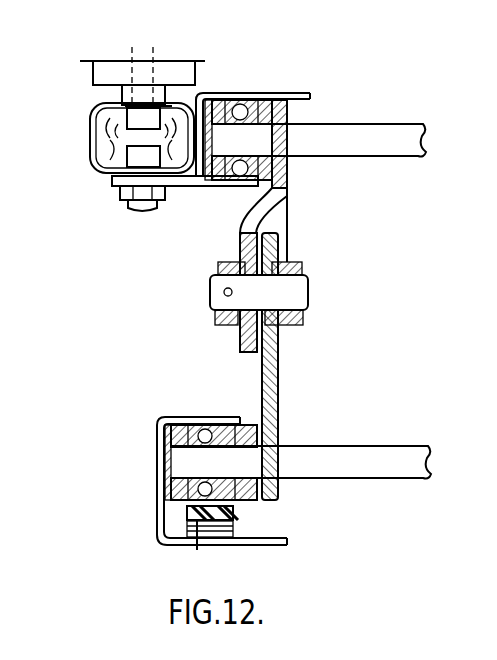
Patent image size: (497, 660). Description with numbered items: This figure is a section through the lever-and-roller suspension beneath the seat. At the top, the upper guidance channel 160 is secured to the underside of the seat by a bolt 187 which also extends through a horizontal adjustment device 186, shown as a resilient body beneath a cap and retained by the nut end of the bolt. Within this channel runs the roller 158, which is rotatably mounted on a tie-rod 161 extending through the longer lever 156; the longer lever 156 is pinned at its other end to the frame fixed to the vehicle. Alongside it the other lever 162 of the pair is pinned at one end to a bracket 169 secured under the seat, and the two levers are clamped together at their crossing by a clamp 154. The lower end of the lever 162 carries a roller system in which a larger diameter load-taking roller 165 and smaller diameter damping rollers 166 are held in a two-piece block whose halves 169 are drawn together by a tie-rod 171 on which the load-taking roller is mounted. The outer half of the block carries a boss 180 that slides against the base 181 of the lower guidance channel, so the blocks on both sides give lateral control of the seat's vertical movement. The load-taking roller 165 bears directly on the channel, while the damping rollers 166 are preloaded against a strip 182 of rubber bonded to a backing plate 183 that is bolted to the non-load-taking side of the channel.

The clamp 154 is at (306, 292).
The longer lever 156 is at (246, 252).
The roller 158 is at (250, 100).
The upper guidance channel 160 is at (232, 93).
The tie-rod 161 is at (348, 148).
The lever 162 is at (278, 385).
The load-taking roller 165 is at (181, 416).
The damping roller 166 is at (237, 512).
The bracket 169 is at (252, 425).
The tie-rod 171 is at (370, 468).
The boss 180 is at (158, 480).
The base of guidance channel 181 is at (165, 470).
The strip of rubber 182 is at (187, 527).
The backing plate 183 is at (197, 542).
The horizontal adjustment device 186 is at (92, 135).
The bolt 187 is at (122, 200).